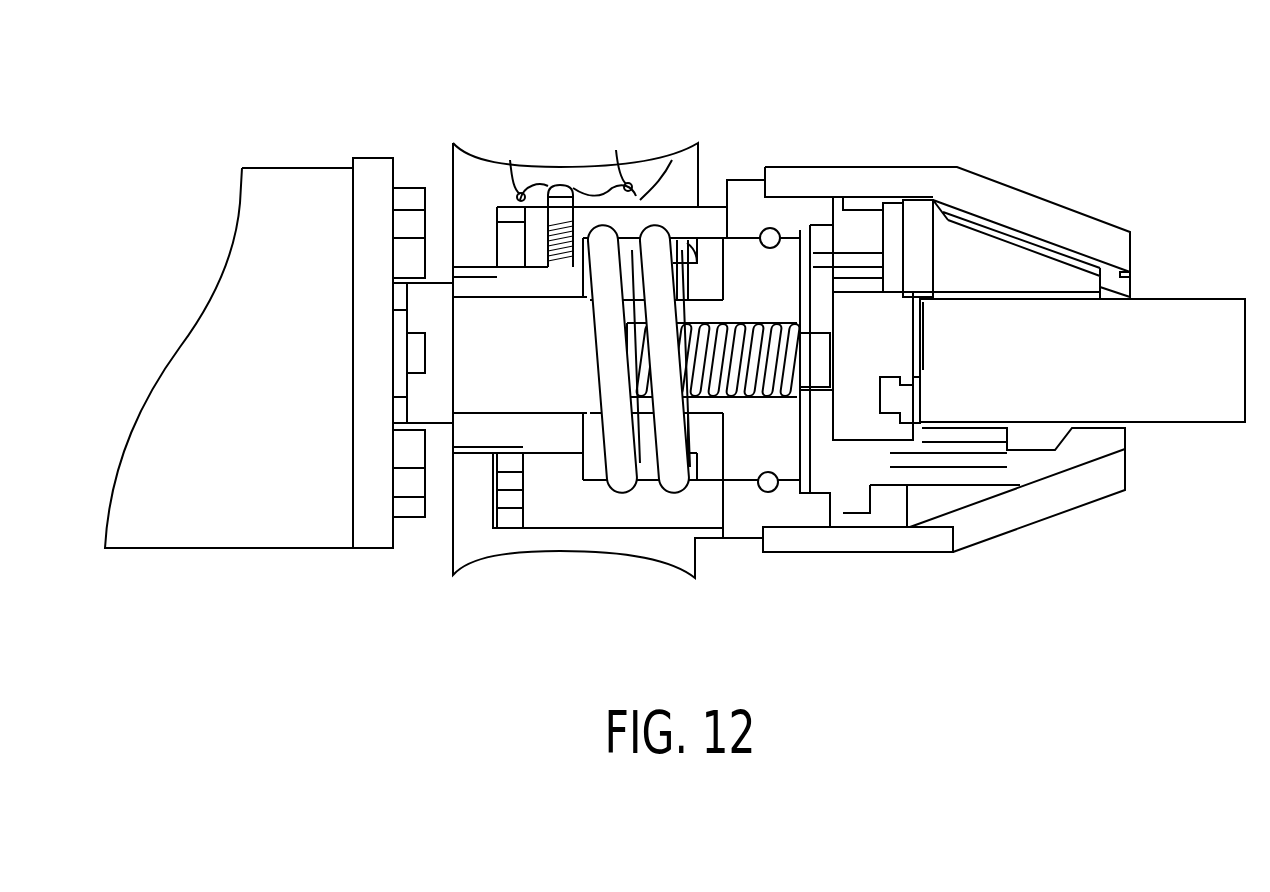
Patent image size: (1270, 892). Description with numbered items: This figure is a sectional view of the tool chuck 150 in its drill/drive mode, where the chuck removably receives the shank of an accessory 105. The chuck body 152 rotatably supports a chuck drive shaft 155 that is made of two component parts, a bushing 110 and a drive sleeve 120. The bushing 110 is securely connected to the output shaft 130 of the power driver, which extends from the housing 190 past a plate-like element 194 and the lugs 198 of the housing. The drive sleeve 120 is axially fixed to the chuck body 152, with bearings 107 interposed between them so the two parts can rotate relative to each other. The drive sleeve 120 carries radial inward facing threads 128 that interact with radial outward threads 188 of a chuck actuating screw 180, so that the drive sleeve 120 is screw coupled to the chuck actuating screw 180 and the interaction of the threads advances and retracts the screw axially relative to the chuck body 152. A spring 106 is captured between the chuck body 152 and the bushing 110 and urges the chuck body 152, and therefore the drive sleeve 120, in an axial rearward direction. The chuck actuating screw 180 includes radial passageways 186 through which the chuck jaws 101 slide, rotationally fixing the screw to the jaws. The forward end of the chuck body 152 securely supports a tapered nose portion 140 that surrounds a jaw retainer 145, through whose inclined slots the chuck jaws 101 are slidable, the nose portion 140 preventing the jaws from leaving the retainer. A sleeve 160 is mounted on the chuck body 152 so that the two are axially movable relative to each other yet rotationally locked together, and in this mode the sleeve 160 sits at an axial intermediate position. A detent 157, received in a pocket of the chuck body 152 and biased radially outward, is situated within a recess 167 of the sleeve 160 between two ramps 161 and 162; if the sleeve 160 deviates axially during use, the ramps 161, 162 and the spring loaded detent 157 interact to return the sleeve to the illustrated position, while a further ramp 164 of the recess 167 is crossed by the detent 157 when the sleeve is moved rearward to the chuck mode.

The housing 190 is at (305, 112).
The mounting plate 194 is at (373, 157).
The lugs 198 is at (411, 184).
The sleeve 160 is at (484, 152).
The ramp 161 is at (517, 190).
The detent 157 is at (556, 183).
The ramp 162 is at (600, 194).
The ramp 164 is at (628, 183).
The recess 167 is at (642, 198).
The output shaft 130 is at (523, 420).
The chuck body 152 is at (563, 530).
The chuck drive shaft 155 is at (640, 633).
The bushing 110 is at (717, 484).
The drive sleeve 120 is at (750, 484).
The radial inward facing threads 128 is at (730, 320).
The spring 106 is at (673, 484).
The radial outward threads 188 is at (747, 398).
The bearings 107 is at (772, 494).
The chuck actuating screw 180 is at (842, 445).
The radial passageways 186 is at (897, 425).
The chuck jaws 101 is at (1013, 218).
The accessory 105 is at (1195, 299).
The tool chuck 150 is at (980, 86).
The nose portion 140 is at (1040, 523).
The jaw retainer 145 is at (1090, 467).